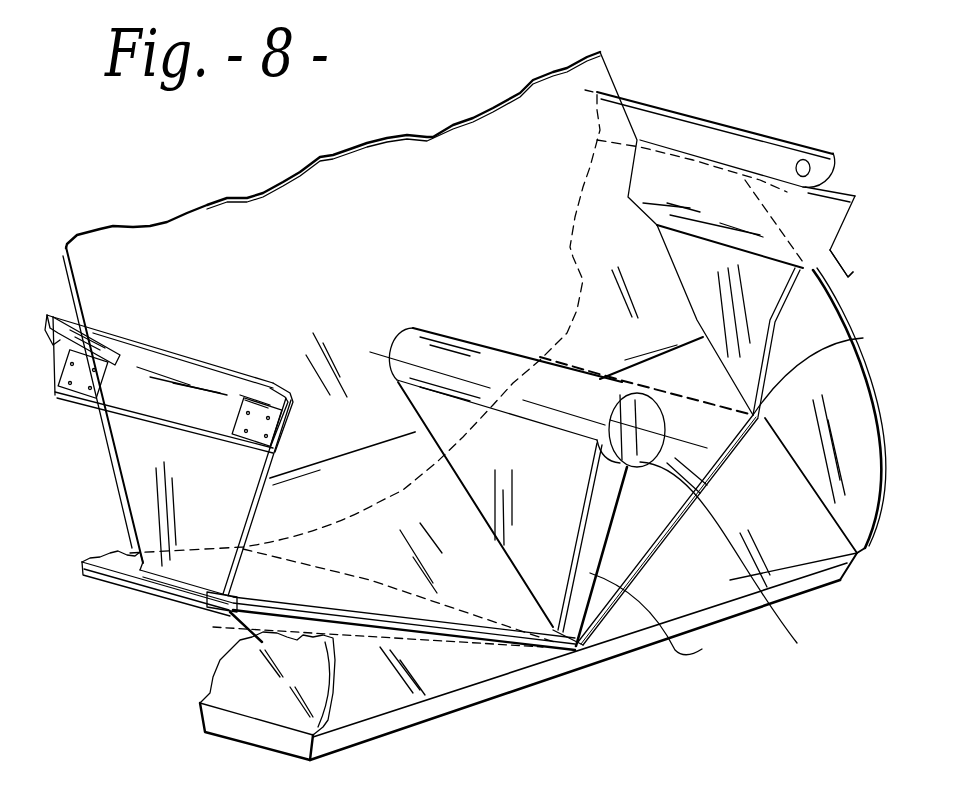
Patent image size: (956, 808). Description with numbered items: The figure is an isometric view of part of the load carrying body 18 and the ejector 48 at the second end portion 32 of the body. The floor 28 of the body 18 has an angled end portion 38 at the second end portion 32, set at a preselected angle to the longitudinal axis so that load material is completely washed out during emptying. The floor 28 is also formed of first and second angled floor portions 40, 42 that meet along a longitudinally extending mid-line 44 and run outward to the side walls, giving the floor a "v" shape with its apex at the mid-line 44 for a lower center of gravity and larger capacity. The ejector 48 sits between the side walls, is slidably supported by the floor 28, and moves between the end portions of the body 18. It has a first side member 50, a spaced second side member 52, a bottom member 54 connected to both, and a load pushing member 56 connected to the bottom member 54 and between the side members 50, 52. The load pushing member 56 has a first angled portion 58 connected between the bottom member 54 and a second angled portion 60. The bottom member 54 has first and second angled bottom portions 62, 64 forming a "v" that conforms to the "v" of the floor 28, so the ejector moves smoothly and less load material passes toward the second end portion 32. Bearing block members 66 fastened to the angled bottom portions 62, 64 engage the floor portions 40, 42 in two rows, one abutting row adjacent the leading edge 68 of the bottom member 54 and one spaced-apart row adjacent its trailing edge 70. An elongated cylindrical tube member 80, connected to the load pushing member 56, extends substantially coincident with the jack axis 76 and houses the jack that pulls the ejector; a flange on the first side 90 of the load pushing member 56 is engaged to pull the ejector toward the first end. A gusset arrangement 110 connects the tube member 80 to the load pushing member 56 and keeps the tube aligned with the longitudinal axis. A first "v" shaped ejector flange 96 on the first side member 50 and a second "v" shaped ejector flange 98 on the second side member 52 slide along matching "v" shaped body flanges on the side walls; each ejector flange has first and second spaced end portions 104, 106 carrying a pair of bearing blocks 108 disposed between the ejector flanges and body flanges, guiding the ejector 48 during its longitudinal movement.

The load carrying body 18 is at (845, 600).
The floor 28 is at (108, 580).
The second end portion 32 is at (868, 545).
The angled end portion 38 is at (458, 671).
The first angled floor portion 40 is at (180, 587).
The second angled floor portion 42 is at (863, 340).
The mid-line 44 is at (592, 672).
The ejector 48 is at (530, 88).
The first side member 50 is at (145, 482).
The second side member 52 is at (770, 308).
The bottom member 54 is at (578, 648).
The load pushing member 56 is at (63, 257).
The first angled portion 58 is at (338, 501).
The second angled portion 60 is at (378, 253).
The first angled bottom portion 62 is at (200, 590).
The second angled bottom portion 64 is at (780, 630).
The bearing block members 66 is at (235, 598).
The leading edge 68 is at (294, 610).
The trailing edge 70 is at (130, 552).
The jack axis 76 is at (700, 480).
The elongated cylindrical tube member 80 is at (453, 337).
The first side 90 is at (697, 672).
The first "v" shaped ejector flange 96 is at (158, 407).
The second "v" shaped ejector flange 98 is at (642, 183).
The first end portion 104 is at (850, 228).
The second end portion 106 is at (72, 366).
The bearing blocks 108 is at (247, 415).
The gusset arrangement 110 is at (667, 616).